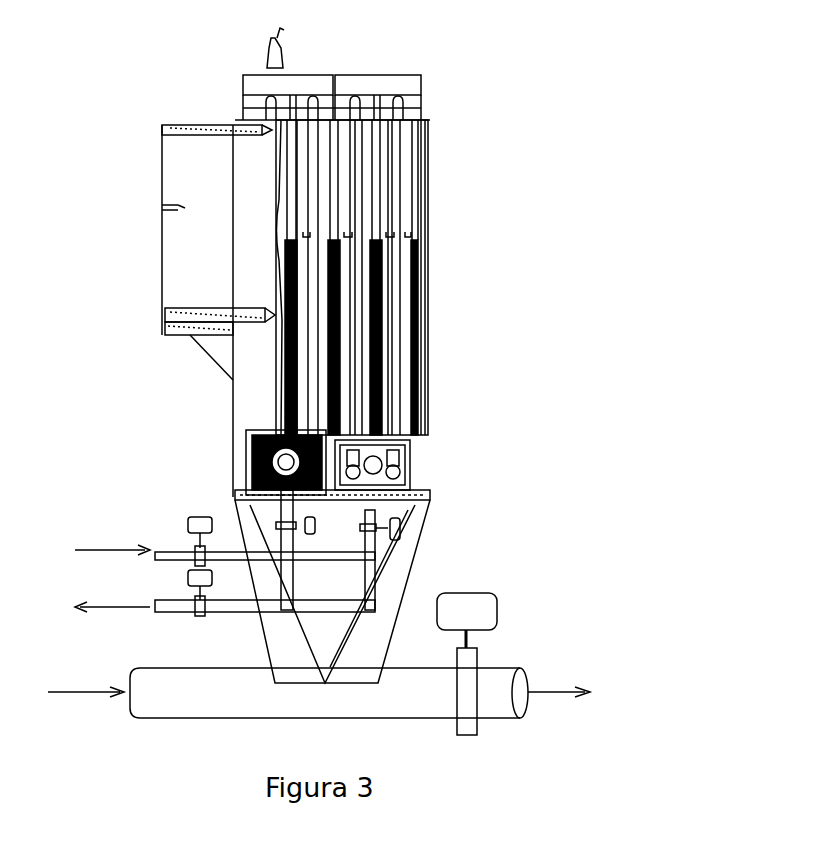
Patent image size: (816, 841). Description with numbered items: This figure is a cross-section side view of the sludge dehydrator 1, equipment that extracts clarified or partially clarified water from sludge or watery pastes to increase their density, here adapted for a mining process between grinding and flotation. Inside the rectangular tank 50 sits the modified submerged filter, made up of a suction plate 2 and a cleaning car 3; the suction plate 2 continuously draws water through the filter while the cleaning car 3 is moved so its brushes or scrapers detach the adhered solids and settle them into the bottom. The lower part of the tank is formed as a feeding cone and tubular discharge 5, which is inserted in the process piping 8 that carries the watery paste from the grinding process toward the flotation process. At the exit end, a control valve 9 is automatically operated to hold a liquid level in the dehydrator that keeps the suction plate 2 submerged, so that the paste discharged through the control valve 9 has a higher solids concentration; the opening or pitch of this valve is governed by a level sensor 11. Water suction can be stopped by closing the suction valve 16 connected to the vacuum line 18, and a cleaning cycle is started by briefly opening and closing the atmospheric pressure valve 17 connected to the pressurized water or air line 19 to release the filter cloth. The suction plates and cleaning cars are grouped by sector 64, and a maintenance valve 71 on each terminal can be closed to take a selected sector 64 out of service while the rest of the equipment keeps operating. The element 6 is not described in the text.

The sludge dehydrator 1 is at (428, 302).
The suction plate 2 is at (405, 233).
The cleaning car 3 is at (415, 100).
The feeding cone and tubular discharge 5 is at (398, 563).
The nozzle 6 is at (277, 47).
The process piping 8 is at (235, 712).
The control valve 9 is at (474, 657).
The level sensor 11 is at (233, 45).
The suction valve 16 is at (190, 613).
The atmospheric pressure valve 17 is at (188, 527).
The vacuum line 18 is at (230, 618).
The pressurized water or air line 19 is at (175, 558).
The rectangular tank 50 is at (245, 405).
The sector 64 is at (258, 490).
The maintenance valve 71 is at (400, 530).